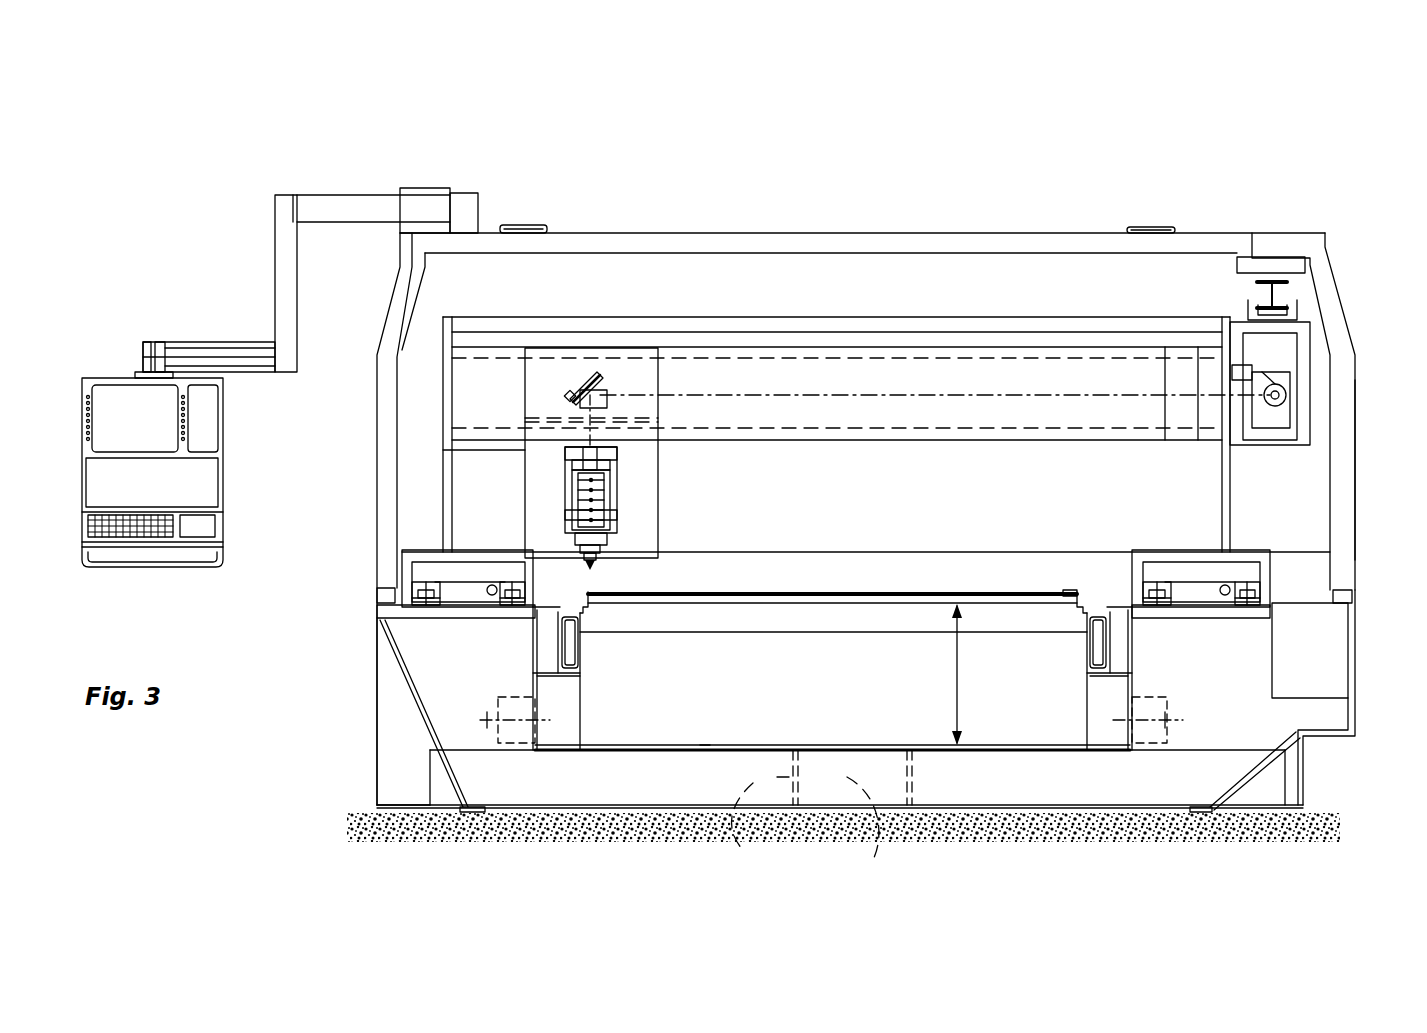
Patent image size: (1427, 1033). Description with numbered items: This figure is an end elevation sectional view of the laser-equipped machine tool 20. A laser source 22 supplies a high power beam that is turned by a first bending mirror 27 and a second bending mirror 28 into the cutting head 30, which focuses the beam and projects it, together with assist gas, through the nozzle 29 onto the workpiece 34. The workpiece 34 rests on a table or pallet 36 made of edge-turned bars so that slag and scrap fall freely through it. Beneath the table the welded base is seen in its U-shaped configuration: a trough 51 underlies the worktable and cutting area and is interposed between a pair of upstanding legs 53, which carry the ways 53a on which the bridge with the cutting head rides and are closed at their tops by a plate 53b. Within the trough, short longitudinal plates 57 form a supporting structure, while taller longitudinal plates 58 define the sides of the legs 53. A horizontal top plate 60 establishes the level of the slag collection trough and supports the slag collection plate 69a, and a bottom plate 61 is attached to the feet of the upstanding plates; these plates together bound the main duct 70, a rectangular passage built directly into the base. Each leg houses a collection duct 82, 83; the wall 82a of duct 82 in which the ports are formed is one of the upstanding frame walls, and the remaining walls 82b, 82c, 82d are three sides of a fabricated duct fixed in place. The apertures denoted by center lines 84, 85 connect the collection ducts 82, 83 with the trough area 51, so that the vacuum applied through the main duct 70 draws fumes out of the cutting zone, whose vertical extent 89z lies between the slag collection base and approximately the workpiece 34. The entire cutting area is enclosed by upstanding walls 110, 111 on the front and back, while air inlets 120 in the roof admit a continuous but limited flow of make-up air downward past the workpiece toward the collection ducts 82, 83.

The machine tool 20 is at (866, 208).
The laser source 22 is at (938, 395).
The first bending mirror 27 is at (1278, 412).
The second bending mirror 28 is at (600, 392).
The nozzle 29 is at (594, 564).
The cutting head 30 is at (615, 483).
The workpiece 34 is at (890, 590).
The table or pallet 36 is at (978, 600).
The trough 51 is at (993, 718).
The upstanding legs 53 is at (415, 663).
The ways 53a is at (512, 602).
The plate 53b is at (392, 600).
The short longitudinal plates 57 is at (765, 817).
The taller longitudinal plates 58 is at (377, 740).
The horizontal plate 60 is at (942, 752).
The bottom plate 61 is at (405, 810).
The slag collection plate 69a is at (705, 745).
The main duct 70 is at (879, 817).
The collection duct 82 is at (525, 712).
The wall 82a is at (532, 730).
The duct wall 82b is at (505, 745).
The duct wall 82c is at (505, 740).
The duct wall 82d is at (512, 698).
The collection duct 83 is at (1145, 712).
The aperture center lines 84 is at (487, 718).
The aperture center lines 85 is at (1125, 735).
The Z coordinate of cutting zone 89z is at (959, 674).
The upstanding wall 110 is at (383, 496).
The upstanding wall 111 is at (1345, 450).
The air inlets 120 is at (535, 226).